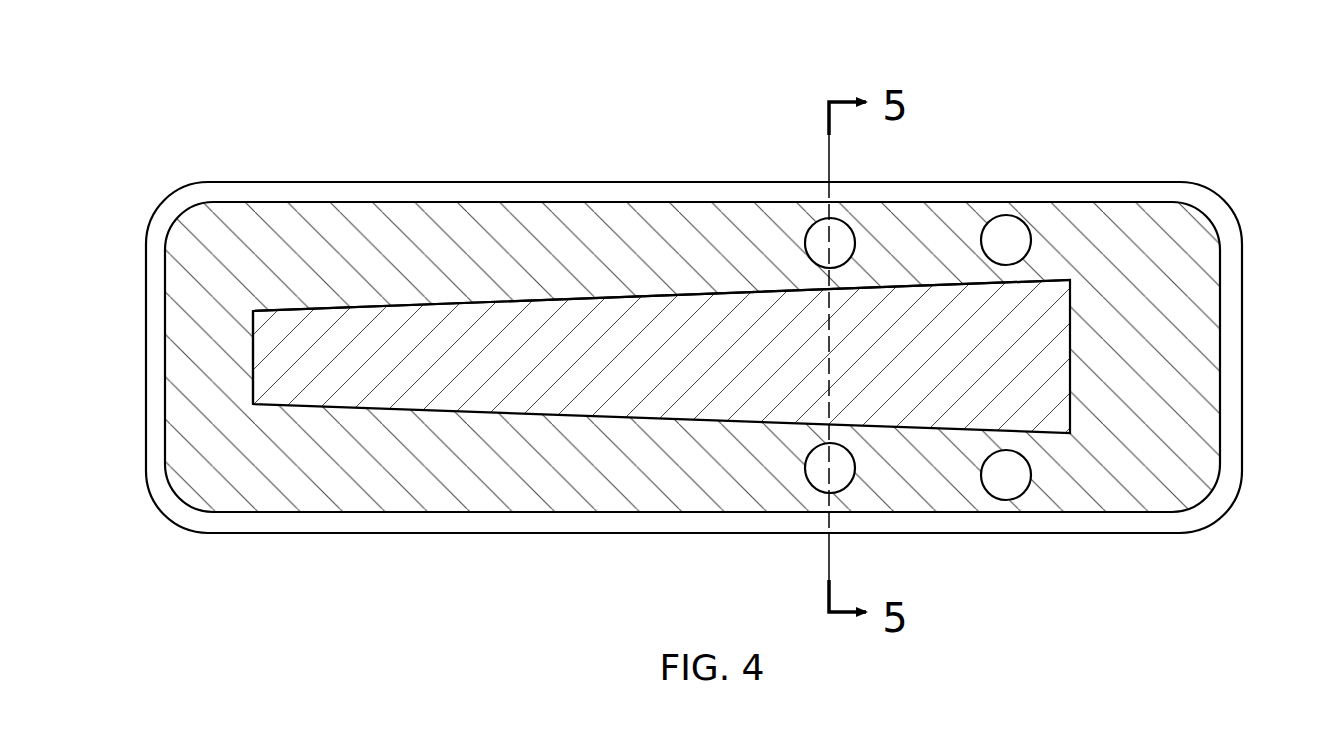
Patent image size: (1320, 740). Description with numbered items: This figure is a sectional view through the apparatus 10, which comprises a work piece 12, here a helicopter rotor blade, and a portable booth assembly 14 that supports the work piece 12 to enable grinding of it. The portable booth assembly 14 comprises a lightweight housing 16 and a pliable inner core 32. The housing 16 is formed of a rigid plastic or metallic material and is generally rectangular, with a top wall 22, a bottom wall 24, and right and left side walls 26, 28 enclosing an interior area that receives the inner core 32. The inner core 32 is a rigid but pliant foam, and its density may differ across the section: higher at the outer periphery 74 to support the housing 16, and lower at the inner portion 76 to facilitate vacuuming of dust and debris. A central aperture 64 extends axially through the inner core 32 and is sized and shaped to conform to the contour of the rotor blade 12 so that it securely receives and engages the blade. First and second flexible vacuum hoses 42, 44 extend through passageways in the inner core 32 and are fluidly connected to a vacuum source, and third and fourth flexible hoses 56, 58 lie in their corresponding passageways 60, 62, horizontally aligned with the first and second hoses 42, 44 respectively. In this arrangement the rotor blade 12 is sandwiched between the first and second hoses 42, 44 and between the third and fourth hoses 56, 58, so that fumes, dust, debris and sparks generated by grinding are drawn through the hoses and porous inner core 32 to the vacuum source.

The apparatus 10 is at (110, 126).
The work piece 12 is at (393, 404).
The portable booth assembly 14 is at (201, 176).
The housing 16 is at (1203, 188).
The top wall 22 is at (283, 182).
The bottom wall 24 is at (283, 533).
The right side wall 26 is at (1242, 370).
The left side wall 28 is at (147, 375).
The inner core 32 is at (397, 215).
The first flexible vacuum hose 42 is at (822, 220).
The second flexible vacuum hose 44 is at (820, 492).
The third flexible hose 56 is at (1012, 216).
The fourth flexible hose 58 is at (1012, 499).
The third passageway 60 is at (993, 216).
The fourth passageway 62 is at (995, 499).
The central aperture 64 is at (253, 404).
The outer periphery 74 is at (420, 512).
The inner portion 76 is at (610, 288).